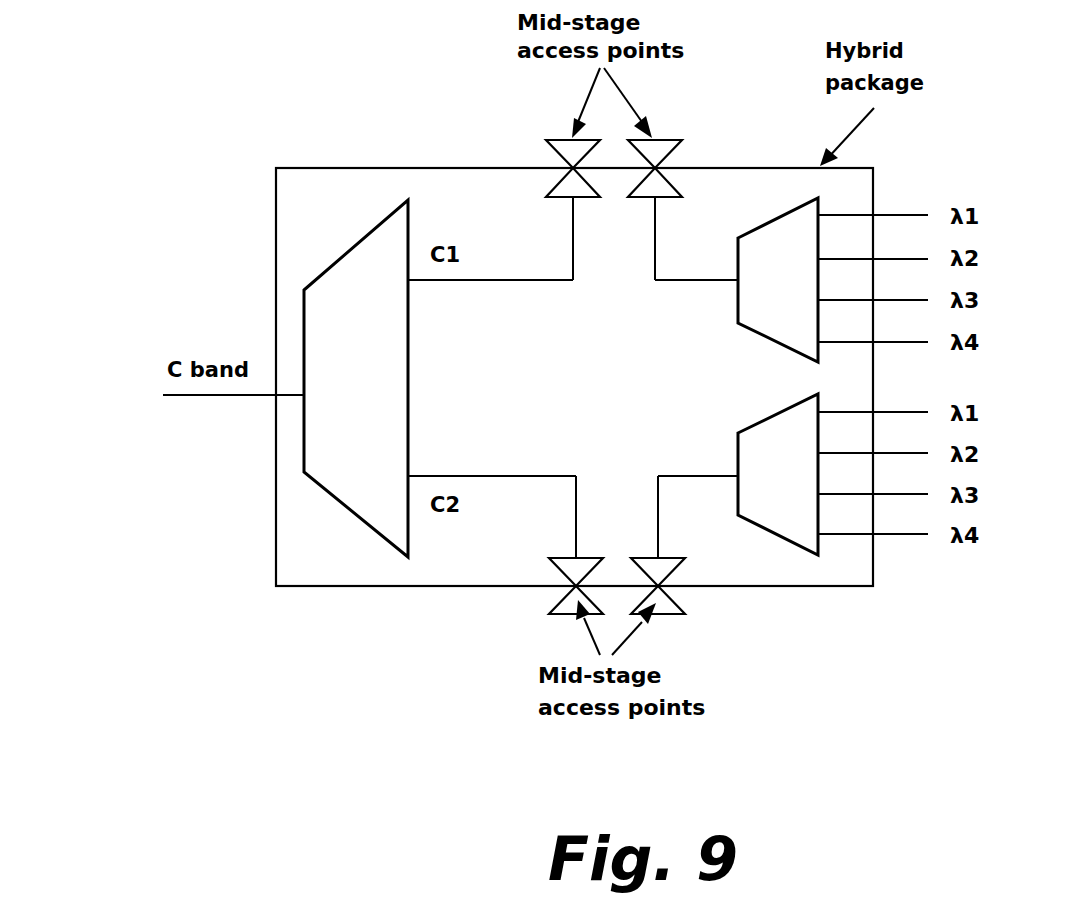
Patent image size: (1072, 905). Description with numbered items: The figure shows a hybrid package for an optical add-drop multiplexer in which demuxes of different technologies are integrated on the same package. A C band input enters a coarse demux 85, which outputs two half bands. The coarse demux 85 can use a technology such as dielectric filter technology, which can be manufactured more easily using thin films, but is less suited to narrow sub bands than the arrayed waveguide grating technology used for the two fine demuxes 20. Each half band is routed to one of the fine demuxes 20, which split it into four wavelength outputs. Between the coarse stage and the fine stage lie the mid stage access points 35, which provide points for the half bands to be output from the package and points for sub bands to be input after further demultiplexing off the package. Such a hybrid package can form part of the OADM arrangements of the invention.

The coarse demux 85 is at (373, 385).
The fine demux 20 is at (798, 293).
The mid stage access points 35 is at (615, 377).